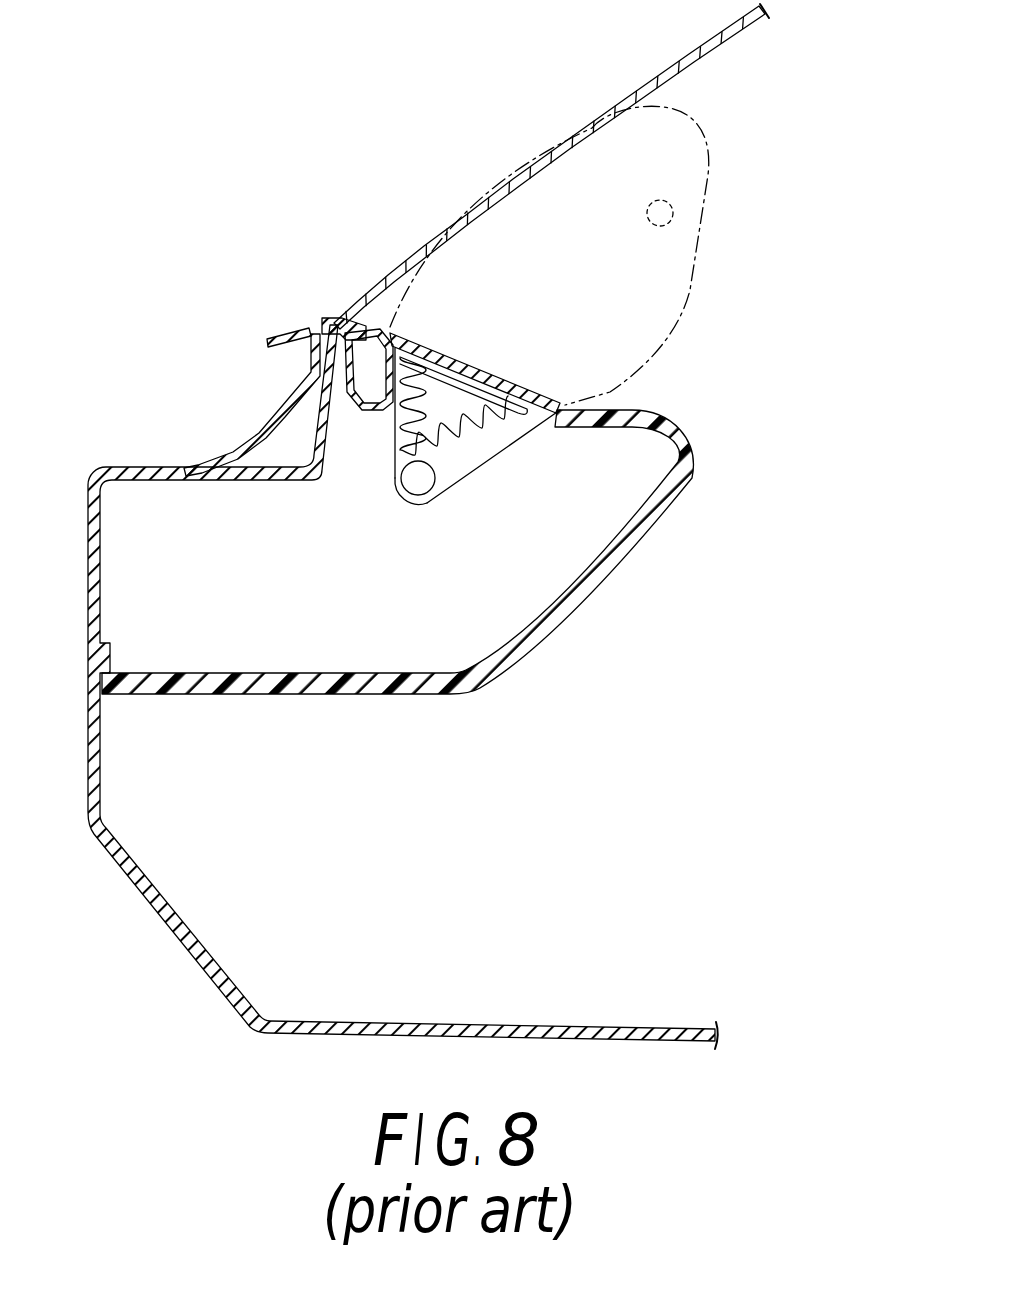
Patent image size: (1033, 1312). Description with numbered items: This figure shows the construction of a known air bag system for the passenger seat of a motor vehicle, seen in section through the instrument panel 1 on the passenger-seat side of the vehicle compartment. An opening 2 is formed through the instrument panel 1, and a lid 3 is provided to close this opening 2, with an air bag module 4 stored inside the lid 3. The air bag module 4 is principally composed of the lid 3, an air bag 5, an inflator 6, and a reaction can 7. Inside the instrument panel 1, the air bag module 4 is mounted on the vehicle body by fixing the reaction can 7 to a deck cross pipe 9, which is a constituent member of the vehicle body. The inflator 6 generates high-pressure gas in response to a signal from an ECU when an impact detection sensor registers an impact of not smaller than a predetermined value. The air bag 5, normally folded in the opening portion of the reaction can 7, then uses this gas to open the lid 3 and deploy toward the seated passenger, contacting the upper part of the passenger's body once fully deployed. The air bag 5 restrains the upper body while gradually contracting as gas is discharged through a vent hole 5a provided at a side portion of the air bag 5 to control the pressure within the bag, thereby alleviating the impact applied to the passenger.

The instrument panel 1 is at (620, 567).
The opening 2 is at (473, 355).
The lid 3 is at (513, 376).
The air bag module 4 is at (401, 507).
The air bag 5 is at (462, 450).
The vent hole 5a is at (673, 218).
The inflator 6 is at (421, 503).
The reaction can 7 is at (520, 437).
The deck cross pipe 9 is at (354, 412).